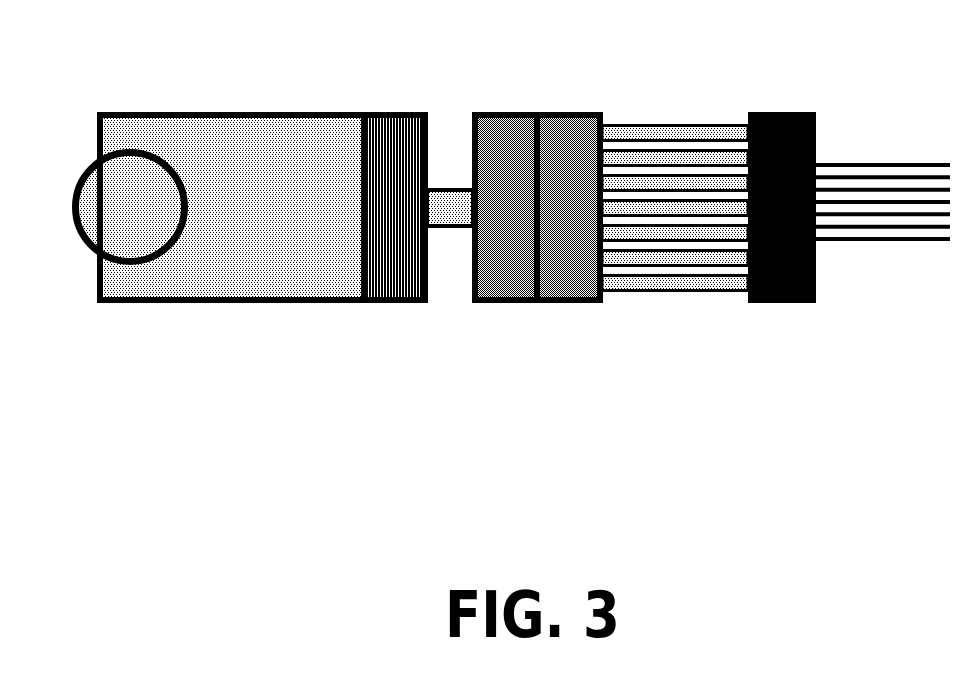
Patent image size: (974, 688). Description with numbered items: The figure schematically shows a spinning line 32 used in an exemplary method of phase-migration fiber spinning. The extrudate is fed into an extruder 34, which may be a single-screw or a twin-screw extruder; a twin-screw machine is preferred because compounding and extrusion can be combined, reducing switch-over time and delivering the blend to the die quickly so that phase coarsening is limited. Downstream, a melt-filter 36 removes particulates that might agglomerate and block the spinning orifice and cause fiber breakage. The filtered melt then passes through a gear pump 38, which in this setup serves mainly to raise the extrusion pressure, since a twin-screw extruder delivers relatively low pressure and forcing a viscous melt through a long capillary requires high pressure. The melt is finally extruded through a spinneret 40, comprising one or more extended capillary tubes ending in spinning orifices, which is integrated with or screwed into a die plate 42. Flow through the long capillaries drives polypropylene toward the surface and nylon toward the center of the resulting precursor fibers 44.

The spinning line 32 is at (498, 446).
The extruder 34 is at (200, 112).
The melt-filter 36 is at (400, 112).
The gear pump 38 is at (600, 112).
The spinneret 40 is at (660, 290).
The die plate 42 is at (788, 112).
The phase-migration precursor fiber 44 is at (925, 163).